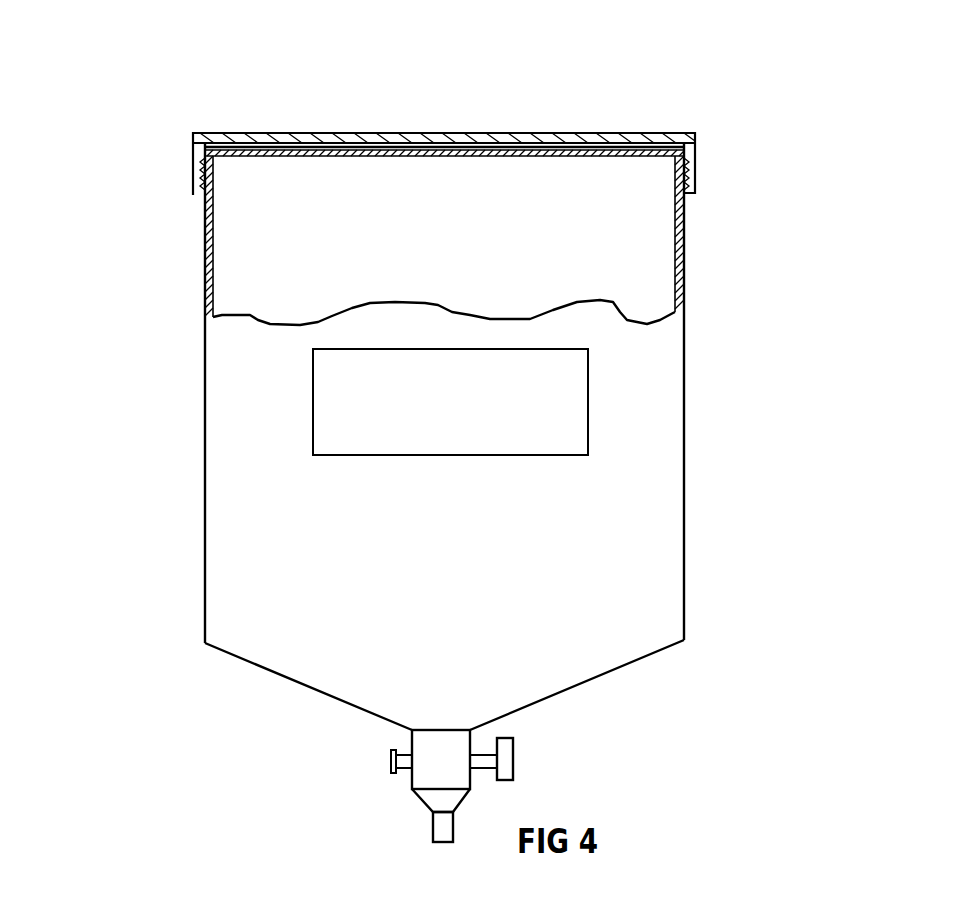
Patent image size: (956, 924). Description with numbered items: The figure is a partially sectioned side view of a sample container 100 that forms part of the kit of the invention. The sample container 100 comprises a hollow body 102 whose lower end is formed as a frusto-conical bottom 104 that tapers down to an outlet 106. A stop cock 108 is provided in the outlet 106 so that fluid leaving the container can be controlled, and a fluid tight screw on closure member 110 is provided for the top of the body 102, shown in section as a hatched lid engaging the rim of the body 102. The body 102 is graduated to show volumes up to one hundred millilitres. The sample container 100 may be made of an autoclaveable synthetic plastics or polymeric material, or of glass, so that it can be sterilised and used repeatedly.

The sample container 100 is at (785, 257).
The hollow body 102 is at (685, 248).
The frusto-conical bottom 104 is at (588, 680).
The outlet 106 is at (440, 843).
The stop cock 108 is at (522, 760).
The screw on closure member 110 is at (508, 134).